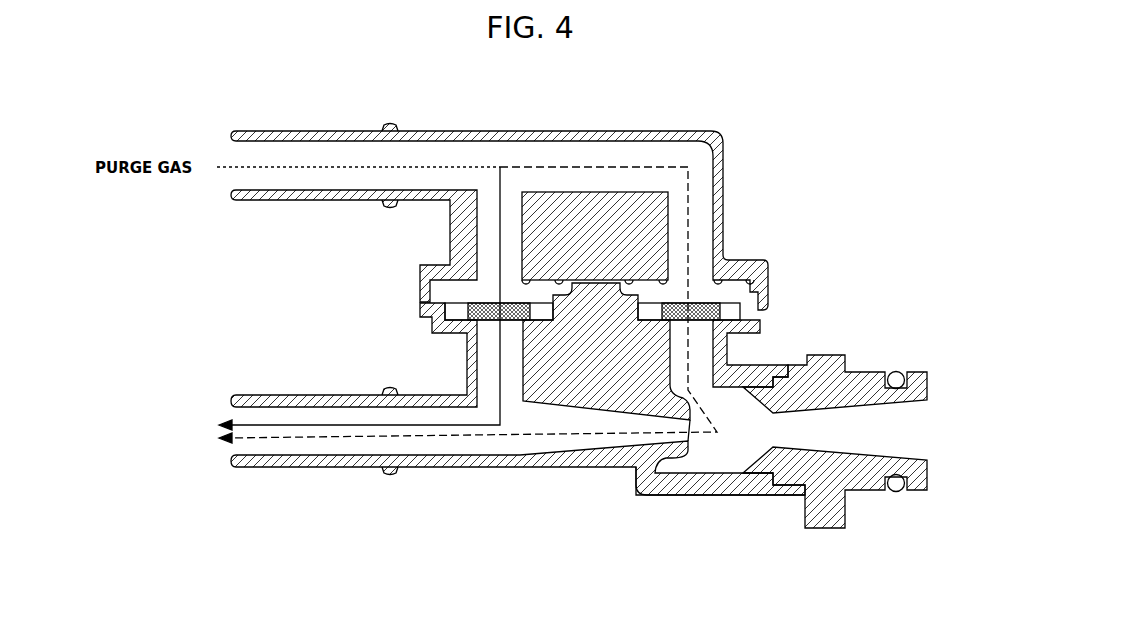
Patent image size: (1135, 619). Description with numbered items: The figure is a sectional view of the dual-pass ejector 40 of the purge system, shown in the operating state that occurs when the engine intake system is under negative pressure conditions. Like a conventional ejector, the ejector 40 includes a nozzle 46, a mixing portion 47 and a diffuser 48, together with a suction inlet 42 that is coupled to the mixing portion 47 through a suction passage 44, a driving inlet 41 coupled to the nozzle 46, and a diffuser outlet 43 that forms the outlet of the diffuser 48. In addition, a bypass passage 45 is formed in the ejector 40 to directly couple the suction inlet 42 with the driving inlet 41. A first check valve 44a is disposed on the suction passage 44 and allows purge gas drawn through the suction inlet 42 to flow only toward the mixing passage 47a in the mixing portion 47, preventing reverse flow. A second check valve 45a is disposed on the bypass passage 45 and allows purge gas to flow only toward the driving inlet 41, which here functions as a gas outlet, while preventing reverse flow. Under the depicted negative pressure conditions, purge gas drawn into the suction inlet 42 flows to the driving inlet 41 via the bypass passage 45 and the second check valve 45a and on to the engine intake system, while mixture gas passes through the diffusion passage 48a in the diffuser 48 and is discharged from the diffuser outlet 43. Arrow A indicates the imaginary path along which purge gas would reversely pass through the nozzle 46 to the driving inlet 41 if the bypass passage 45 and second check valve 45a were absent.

The dual-pass ejector 40 is at (760, 157).
The driving inlet 41 is at (312, 463).
The suction inlet 42 is at (277, 133).
The diffuser outlet 43 is at (915, 428).
The suction passage 44 is at (700, 232).
The first check valve 44a is at (718, 298).
The bypass passage 45 is at (508, 213).
The second check valve 45a is at (445, 303).
The nozzle 46 is at (712, 438).
The mixing portion 47 is at (670, 497).
The mixing passage 47a is at (742, 430).
The diffuser 48 is at (851, 372).
The diffusion passage 48a is at (863, 488).
The arrow A is at (598, 167).